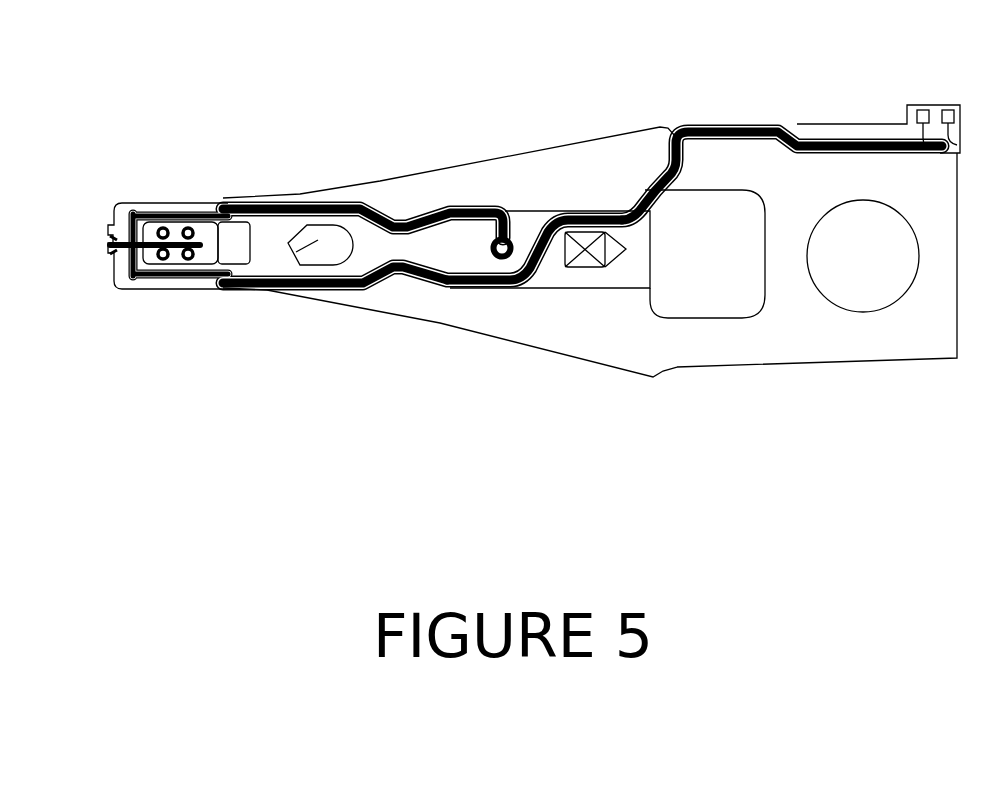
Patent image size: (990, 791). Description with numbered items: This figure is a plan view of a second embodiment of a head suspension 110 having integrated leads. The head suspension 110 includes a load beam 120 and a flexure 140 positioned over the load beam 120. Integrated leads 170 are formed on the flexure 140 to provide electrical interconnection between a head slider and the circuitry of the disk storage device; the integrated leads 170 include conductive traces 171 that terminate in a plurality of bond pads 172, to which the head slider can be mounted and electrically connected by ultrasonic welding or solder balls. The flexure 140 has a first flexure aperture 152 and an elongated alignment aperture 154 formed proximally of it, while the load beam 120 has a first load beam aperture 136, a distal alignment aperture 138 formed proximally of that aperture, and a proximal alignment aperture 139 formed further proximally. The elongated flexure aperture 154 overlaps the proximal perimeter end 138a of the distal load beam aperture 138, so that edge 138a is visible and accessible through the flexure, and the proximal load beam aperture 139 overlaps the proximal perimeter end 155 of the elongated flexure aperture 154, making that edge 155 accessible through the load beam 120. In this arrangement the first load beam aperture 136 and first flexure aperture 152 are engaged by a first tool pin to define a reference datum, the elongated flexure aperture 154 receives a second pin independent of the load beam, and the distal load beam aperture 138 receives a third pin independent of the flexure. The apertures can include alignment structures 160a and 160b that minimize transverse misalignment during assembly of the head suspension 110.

The head suspension 110 is at (750, 84).
The load beam 120 is at (842, 345).
The first load beam aperture 136 is at (305, 256).
The distal alignment aperture 138 is at (572, 257).
The proximal perimeter end 138a is at (605, 266).
The proximal alignment aperture 139 is at (616, 260).
The flexure 140 is at (524, 228).
The first flexure aperture 152 is at (330, 262).
The elongated alignment aperture 154 is at (598, 258).
The proximal perimeter end 155 is at (627, 248).
The alignment structure 160a is at (607, 214).
The alignment structure 160b is at (288, 243).
The integrated leads 170 is at (700, 125).
The conductive traces 171 is at (320, 204).
The bond pads 172 is at (188, 230).